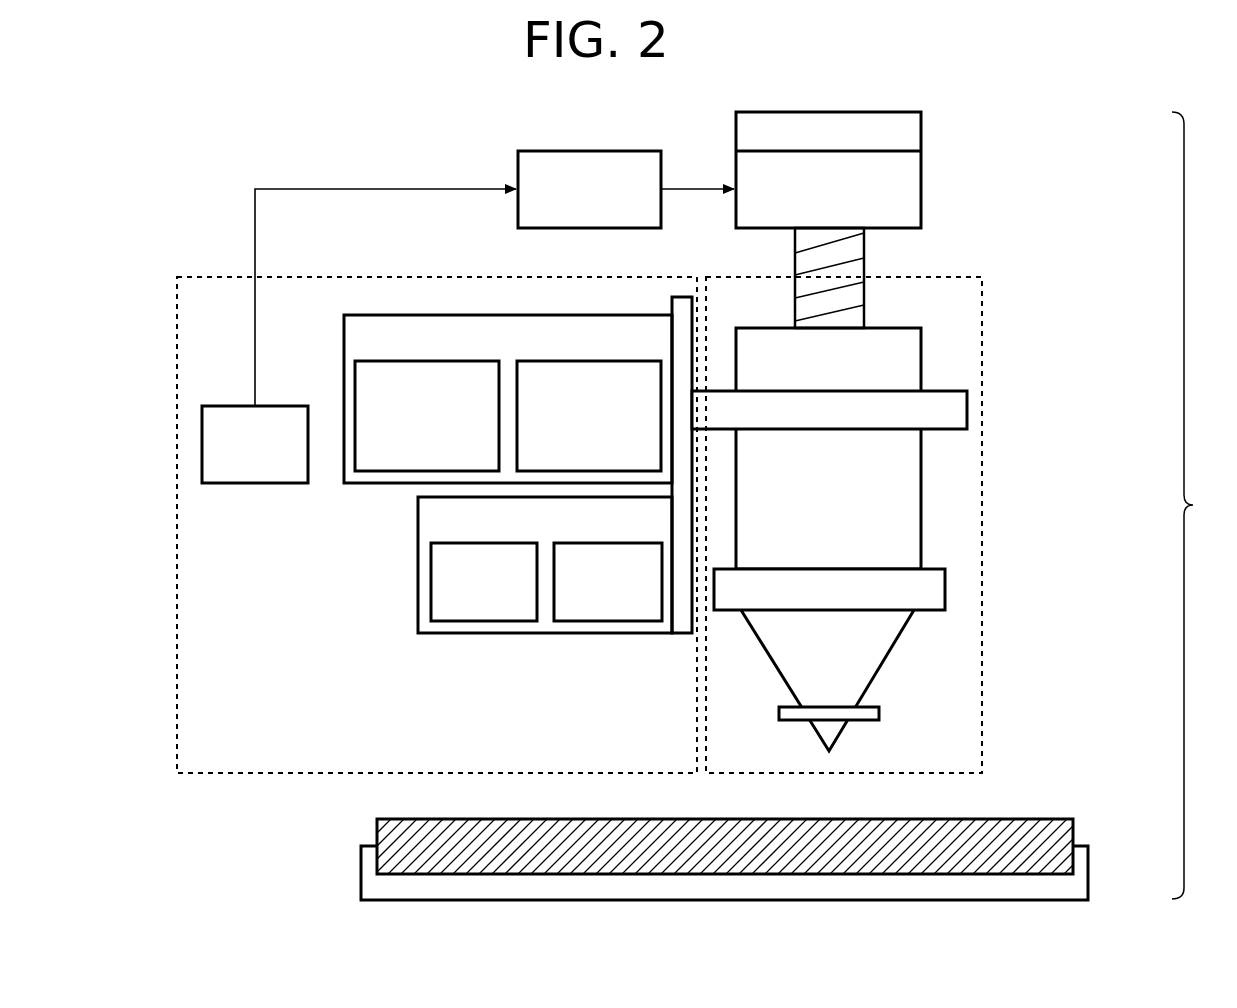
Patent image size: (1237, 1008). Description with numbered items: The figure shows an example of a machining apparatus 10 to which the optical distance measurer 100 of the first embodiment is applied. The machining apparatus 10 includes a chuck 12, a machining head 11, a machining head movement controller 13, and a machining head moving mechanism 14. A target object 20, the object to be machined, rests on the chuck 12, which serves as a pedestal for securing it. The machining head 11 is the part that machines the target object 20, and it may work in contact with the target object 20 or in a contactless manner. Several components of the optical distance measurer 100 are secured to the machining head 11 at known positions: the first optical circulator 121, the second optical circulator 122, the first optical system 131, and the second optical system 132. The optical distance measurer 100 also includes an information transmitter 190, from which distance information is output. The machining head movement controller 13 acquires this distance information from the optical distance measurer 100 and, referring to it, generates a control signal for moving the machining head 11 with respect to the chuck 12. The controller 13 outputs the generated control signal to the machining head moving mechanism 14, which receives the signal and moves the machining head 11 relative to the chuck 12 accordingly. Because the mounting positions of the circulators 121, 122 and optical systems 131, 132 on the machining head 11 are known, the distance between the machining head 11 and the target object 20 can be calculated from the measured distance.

The machining apparatus 10 is at (1202, 505).
The machining head 11 is at (984, 752).
The chuck 12 is at (1090, 871).
The machining head movement controller 13 is at (612, 150).
The machining head moving mechanism 14 is at (923, 176).
The target object 20 is at (1075, 827).
The optical distance measurer 100 is at (305, 276).
The first optical circulator 121 is at (448, 360).
The second optical circulator 122 is at (601, 360).
The first optical system 131 is at (497, 542).
The second optical system 132 is at (611, 542).
The information transmitter 190 is at (270, 405).